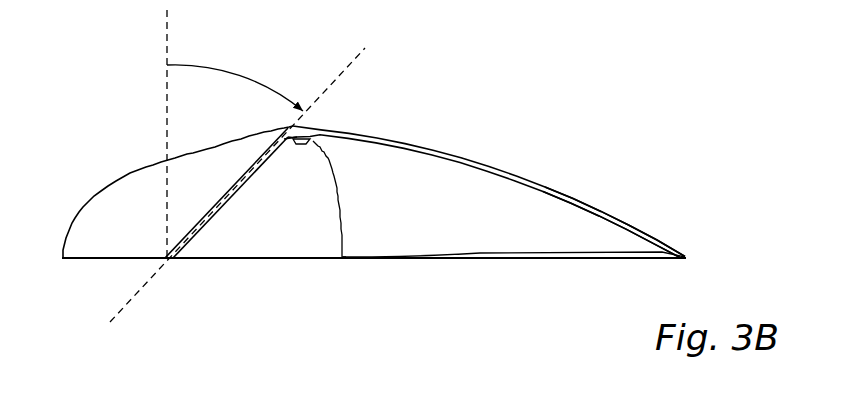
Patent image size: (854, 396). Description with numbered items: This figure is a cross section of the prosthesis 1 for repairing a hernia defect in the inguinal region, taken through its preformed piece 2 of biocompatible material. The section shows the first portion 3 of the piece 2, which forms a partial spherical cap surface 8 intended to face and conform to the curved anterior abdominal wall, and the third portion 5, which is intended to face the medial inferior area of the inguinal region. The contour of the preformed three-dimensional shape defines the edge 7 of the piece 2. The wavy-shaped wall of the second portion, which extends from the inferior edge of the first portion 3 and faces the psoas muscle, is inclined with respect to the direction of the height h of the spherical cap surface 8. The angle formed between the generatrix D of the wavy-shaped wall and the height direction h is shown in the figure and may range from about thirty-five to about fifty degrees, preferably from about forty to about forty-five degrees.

The prosthesis 1 is at (553, 127).
The piece 2 is at (578, 196).
The first portion 3 is at (402, 143).
The third portion 5 is at (129, 207).
The edge 7 is at (493, 262).
The partial spherical cap surface 8 is at (463, 158).
The direction of the height of the spherical cap h is at (158, 35).
The generatrix of the wavy-shaped wall D is at (122, 308).